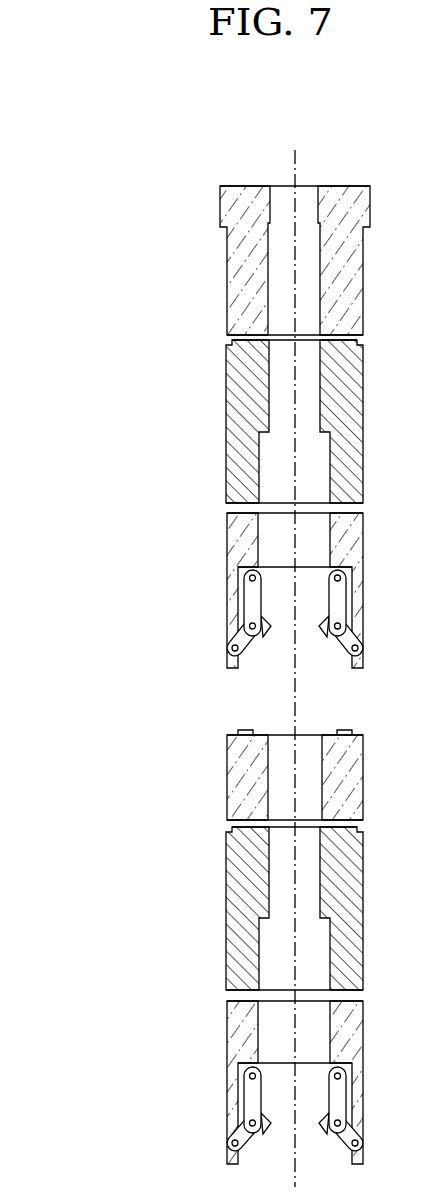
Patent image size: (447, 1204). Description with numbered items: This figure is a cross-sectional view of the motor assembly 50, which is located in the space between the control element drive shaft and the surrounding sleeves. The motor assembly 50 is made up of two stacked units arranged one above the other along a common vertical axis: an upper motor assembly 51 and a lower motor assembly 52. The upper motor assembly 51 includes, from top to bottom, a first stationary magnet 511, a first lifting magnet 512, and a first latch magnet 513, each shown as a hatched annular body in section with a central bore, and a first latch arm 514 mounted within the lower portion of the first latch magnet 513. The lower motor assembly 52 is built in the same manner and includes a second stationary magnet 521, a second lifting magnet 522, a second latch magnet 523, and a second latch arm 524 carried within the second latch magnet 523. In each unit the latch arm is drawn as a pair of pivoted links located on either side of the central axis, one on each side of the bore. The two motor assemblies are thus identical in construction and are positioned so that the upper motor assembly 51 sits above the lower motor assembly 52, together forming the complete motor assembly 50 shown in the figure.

The motor assembly 50 is at (95, 944).
The upper motor assembly 51 is at (146, 262).
The first stationary magnet 511 is at (237, 272).
The first lifting magnet 512 is at (237, 425).
The first latch magnet 513 is at (237, 540).
The first latch arm 514 is at (338, 609).
The lower motor assembly 52 is at (146, 760).
The second stationary magnet 521 is at (237, 771).
The second lifting magnet 522 is at (237, 923).
The second latch magnet 523 is at (237, 1040).
The second latch arm 524 is at (334, 1098).